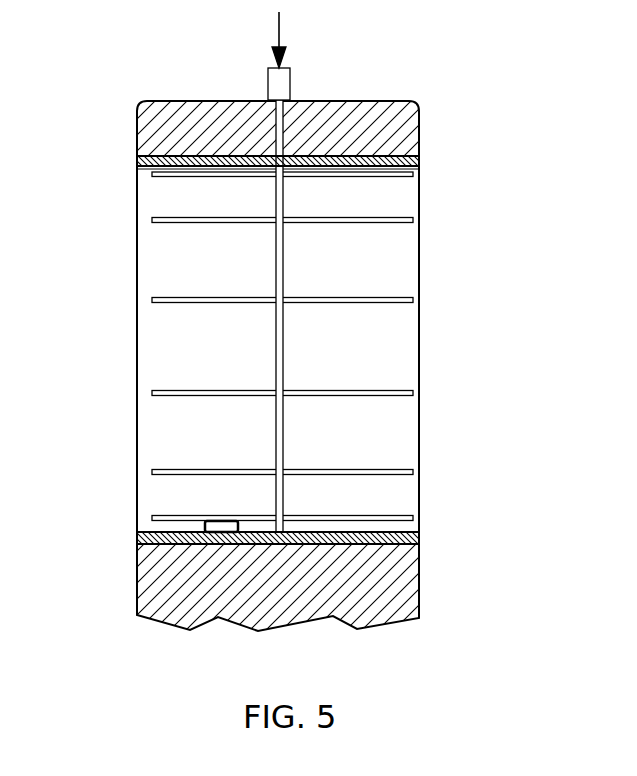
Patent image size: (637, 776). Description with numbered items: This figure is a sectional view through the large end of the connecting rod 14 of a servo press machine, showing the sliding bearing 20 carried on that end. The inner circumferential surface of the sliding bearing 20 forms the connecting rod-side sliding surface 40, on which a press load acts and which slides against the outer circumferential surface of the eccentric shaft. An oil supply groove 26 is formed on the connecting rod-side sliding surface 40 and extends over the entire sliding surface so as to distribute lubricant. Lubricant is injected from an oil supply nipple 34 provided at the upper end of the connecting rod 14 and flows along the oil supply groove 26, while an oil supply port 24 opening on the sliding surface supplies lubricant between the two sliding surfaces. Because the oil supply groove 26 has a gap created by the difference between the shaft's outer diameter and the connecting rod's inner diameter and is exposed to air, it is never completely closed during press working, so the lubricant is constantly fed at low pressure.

The connecting rod 14 is at (412, 102).
The sliding bearing 20 is at (422, 162).
The oil supply port 24 is at (218, 521).
The oil supply groove 26 is at (420, 175).
The oil supply nipple 34 is at (287, 88).
The connecting rod-side sliding surface 40 is at (395, 339).